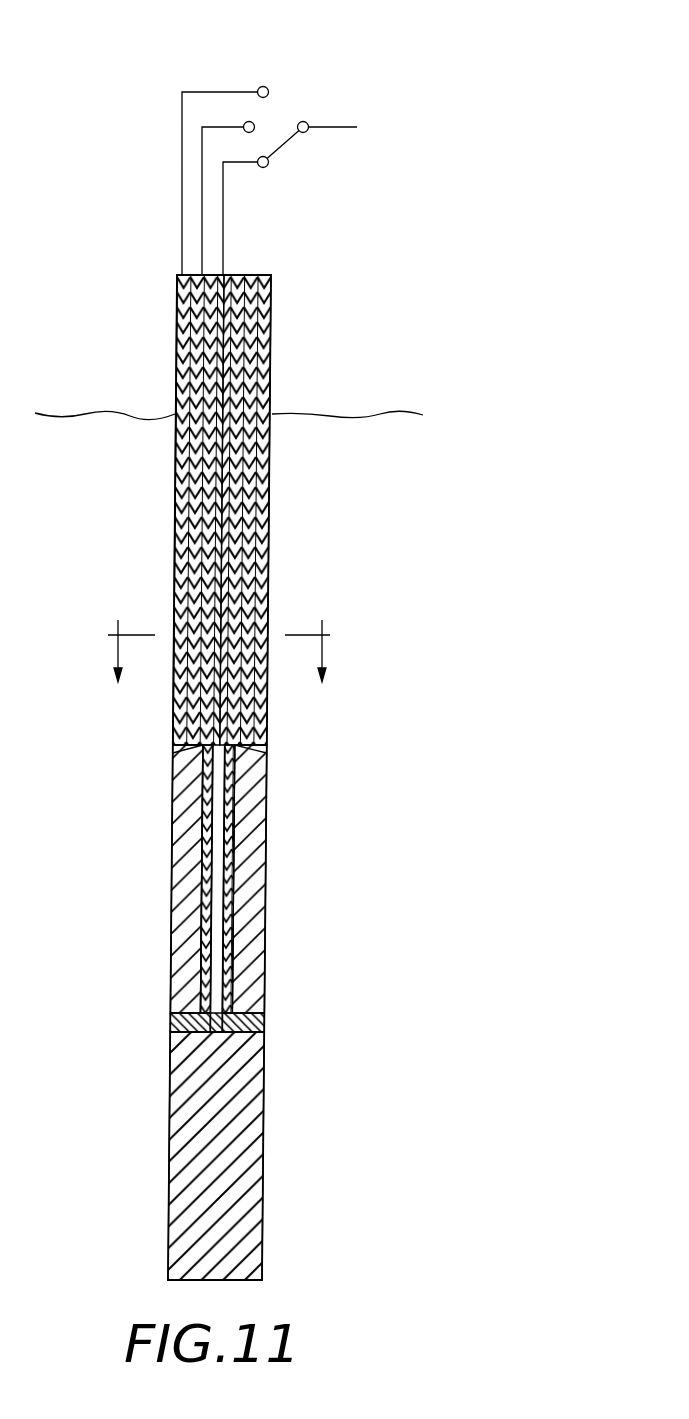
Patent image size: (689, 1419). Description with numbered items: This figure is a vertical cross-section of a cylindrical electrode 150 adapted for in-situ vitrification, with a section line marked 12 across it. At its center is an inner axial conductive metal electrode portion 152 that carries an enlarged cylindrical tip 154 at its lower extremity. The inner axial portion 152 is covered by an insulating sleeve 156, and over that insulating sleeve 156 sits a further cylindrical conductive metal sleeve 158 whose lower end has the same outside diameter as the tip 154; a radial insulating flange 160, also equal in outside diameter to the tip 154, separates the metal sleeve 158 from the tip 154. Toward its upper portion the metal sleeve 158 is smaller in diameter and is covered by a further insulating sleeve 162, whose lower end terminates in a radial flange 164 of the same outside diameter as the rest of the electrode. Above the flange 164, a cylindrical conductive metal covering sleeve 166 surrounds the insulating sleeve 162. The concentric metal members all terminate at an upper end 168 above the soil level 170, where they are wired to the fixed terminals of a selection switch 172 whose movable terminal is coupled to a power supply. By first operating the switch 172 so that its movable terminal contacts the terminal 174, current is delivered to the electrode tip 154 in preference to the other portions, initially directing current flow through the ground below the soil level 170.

The section line 12- 12 is at (221, 648).
The electrode 150 is at (209, 756).
The inner axial conductive metal electrode portion 152 is at (158, 777).
The enlarged cylindrical tip 154 is at (170, 1156).
The insulating sleeve 156 is at (172, 879).
The cylindrical conductive metal sleeve 158 is at (140, 879).
The radial insulating flange 160 is at (171, 1043).
The further insulating sleeve 162 is at (285, 510).
The radial flange 164 is at (265, 861).
The cylindrical conductive metal covering sleeve 166 is at (146, 510).
The upper end 168 is at (262, 254).
The soil level 170 is at (337, 417).
The selection switch 172 is at (291, 88).
The terminal 174 is at (266, 168).